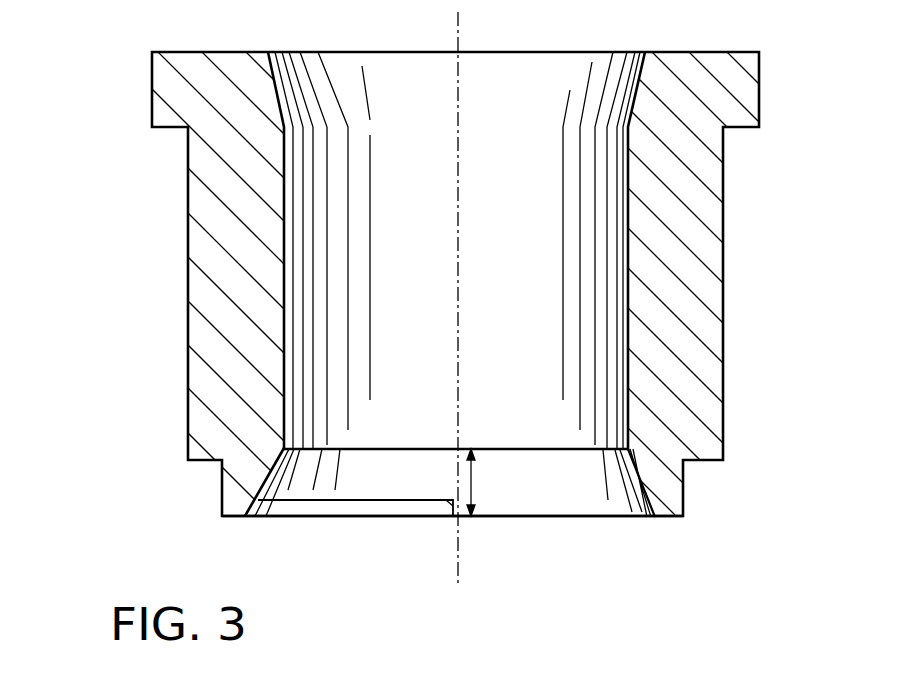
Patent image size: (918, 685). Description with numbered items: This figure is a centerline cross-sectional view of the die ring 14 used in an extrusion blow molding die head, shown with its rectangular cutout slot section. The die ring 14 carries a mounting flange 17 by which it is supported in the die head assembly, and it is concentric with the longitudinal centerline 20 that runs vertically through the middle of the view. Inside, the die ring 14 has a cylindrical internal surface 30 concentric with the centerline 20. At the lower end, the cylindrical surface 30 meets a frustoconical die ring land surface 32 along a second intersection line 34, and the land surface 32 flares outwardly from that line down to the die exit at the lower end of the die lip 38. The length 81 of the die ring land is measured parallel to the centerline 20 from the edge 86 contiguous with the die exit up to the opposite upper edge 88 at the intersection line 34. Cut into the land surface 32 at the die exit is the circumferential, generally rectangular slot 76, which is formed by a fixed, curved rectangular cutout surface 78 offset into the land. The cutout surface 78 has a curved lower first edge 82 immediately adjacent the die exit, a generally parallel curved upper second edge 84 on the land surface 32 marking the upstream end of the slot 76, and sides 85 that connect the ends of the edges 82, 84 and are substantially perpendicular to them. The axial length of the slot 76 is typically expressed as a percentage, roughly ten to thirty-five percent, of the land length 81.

The die ring 14 is at (102, 364).
The mounting flange 17 is at (750, 86).
The longitudinal centerline 20 is at (458, 38).
The cylindrical internal surface 30 is at (285, 252).
The die ring land surface 32 is at (272, 478).
The second intersection line 34 is at (284, 449).
The die lip 38 is at (238, 518).
The rectangular slot 76 is at (406, 519).
The rectangular cutout surface 78 is at (374, 505).
The length of the die ring land 81 is at (477, 486).
The lower first edge 82 is at (357, 519).
The upper second edge 84 is at (333, 500).
The sides 85 is at (452, 505).
The lower edge of die ring land 86 is at (472, 520).
The upper opposite edge 88 is at (471, 448).